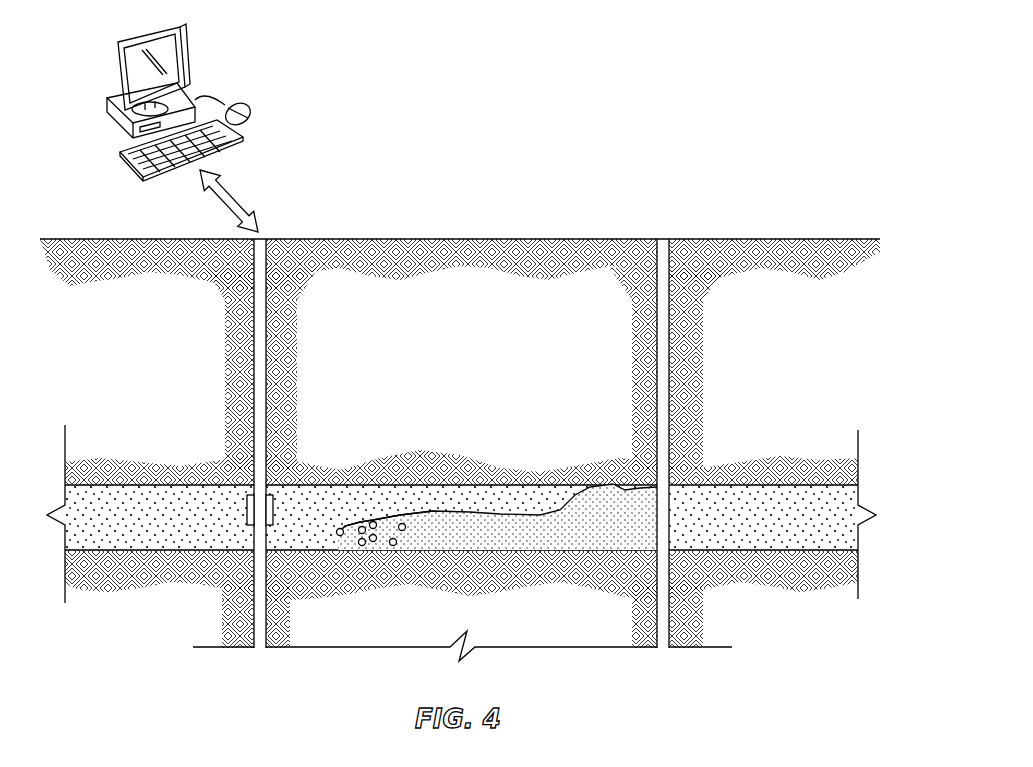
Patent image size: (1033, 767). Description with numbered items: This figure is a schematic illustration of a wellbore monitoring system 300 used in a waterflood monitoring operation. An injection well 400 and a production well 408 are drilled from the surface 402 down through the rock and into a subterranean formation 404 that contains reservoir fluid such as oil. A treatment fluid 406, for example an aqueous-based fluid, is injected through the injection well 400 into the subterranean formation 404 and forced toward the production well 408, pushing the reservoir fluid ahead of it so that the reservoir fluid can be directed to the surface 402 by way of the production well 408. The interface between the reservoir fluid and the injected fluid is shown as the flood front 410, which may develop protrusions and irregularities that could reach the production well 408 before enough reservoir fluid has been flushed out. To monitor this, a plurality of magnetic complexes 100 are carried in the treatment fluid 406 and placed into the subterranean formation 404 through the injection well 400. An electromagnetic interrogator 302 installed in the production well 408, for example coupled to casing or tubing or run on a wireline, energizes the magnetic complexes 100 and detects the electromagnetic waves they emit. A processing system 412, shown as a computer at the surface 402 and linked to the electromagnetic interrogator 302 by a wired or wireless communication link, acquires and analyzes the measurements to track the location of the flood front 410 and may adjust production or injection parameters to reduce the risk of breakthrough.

The magnetic complex 100 is at (341, 540).
The wellbore monitoring system 300 is at (301, 462).
The electromagnetic interrogator 302 is at (244, 508).
The injection well 400 is at (670, 263).
The surface 402 is at (547, 239).
The subterranean formation 404 is at (461, 517).
The treatment fluid 406 is at (560, 547).
The production well 408 is at (254, 347).
The flood front 410 is at (350, 518).
The processing system 412 is at (206, 72).